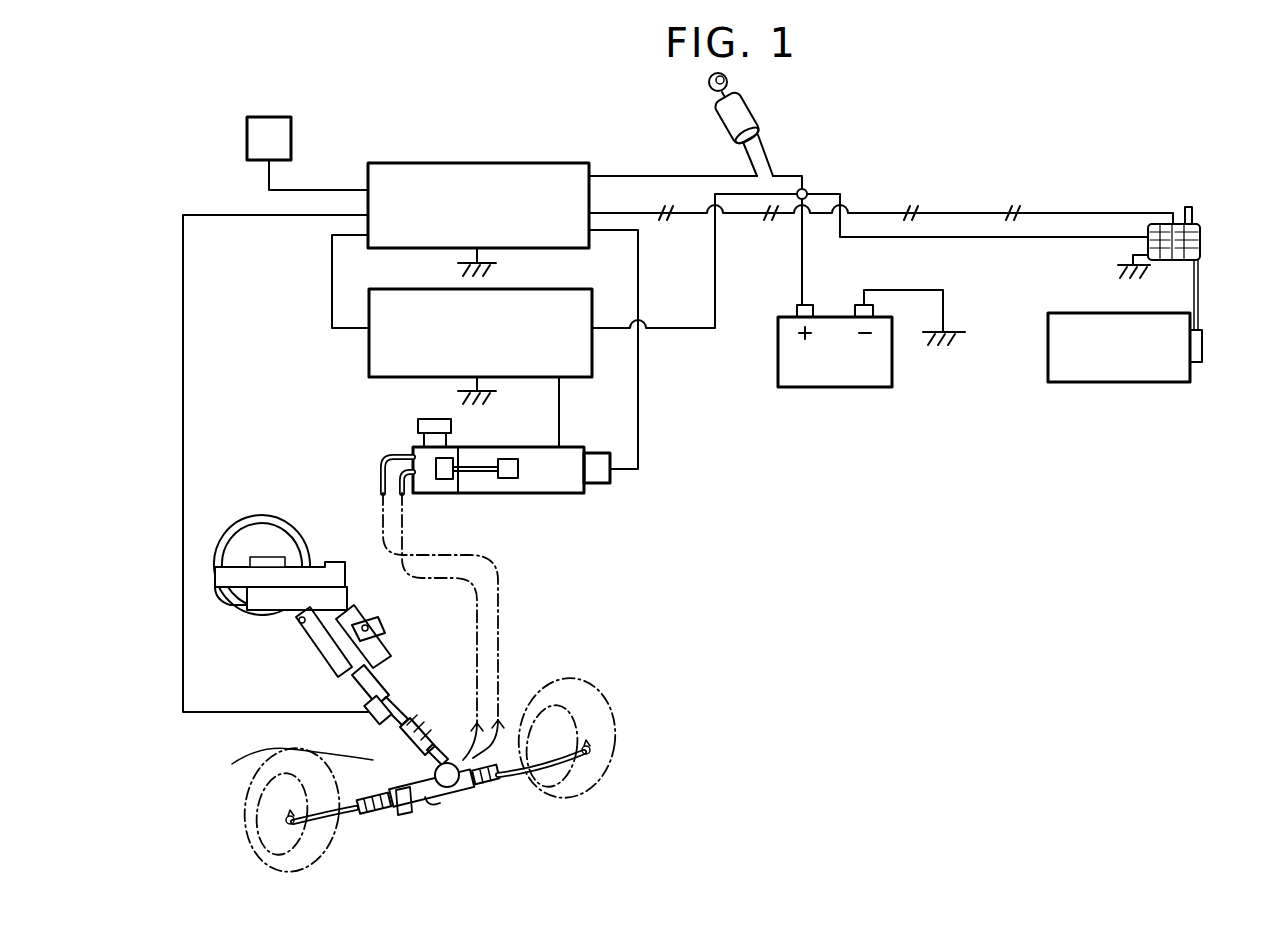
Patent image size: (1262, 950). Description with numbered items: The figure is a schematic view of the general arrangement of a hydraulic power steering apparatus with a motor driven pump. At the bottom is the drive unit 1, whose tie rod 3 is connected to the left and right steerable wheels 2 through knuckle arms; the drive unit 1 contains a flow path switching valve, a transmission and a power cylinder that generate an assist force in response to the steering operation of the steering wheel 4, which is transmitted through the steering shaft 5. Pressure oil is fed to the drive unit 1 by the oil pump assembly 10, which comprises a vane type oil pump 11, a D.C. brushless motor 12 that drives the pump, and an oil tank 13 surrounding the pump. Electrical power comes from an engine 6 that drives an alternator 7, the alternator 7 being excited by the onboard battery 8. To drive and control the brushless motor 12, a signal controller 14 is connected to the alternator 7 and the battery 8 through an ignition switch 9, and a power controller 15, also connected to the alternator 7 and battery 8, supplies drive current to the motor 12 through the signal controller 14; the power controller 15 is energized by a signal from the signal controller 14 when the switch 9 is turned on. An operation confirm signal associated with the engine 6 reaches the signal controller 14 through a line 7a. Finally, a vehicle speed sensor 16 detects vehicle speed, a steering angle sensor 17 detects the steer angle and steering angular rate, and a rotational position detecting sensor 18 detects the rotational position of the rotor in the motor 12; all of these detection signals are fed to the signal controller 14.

The drive unit 1 is at (441, 818).
The steerable wheels 2 is at (320, 848).
The tie rod 3 is at (340, 822).
The steering wheel 4 is at (283, 522).
The steering shaft 5 is at (403, 712).
The engine 6 is at (1145, 383).
The alternator 7 is at (1200, 237).
The line 7a is at (975, 212).
The onboard battery 8 is at (850, 387).
The ignition switch 9 is at (755, 110).
The oil pump assembly 10 is at (631, 510).
The oil pump 11 is at (443, 486).
The D.C. brushless motor 12 is at (542, 483).
The oil tank 13 is at (498, 499).
The signal controller 14 is at (545, 162).
The power controller 15 is at (580, 288).
The vehicle speed sensor 16 is at (287, 117).
The steering angle sensor 17 is at (367, 705).
The rotational position detecting sensor 18 is at (597, 467).